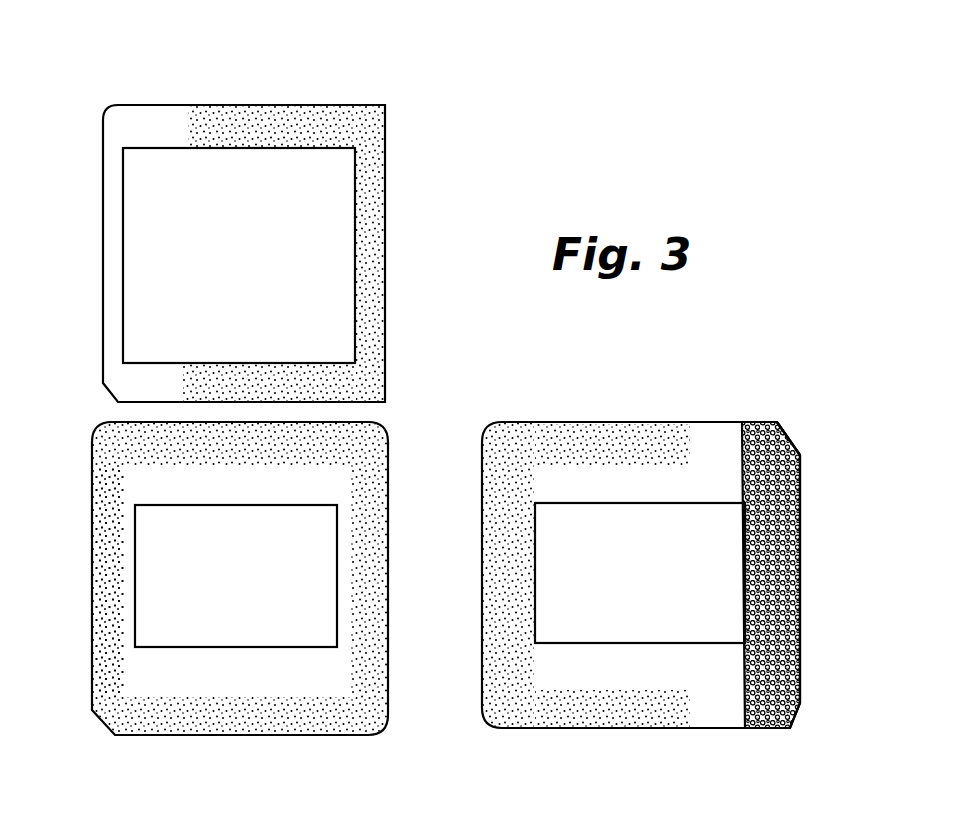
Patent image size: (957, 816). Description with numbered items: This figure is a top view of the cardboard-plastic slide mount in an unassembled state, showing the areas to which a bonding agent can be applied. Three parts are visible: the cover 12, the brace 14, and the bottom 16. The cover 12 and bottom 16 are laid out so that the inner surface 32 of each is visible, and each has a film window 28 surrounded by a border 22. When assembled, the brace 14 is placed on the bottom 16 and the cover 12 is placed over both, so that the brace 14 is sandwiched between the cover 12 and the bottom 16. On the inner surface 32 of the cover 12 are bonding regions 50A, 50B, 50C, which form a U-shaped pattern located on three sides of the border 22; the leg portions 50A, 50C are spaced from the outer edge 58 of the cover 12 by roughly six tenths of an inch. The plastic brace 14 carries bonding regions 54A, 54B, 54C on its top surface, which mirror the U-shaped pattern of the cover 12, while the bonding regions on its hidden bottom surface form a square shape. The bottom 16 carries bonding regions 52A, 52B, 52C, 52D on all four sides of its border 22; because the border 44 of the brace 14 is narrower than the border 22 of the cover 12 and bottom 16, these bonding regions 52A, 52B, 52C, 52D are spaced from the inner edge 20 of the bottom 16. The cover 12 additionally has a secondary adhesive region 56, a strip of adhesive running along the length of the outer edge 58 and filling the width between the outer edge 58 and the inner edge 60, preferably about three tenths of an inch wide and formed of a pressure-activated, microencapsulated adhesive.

The cover 12 is at (731, 420).
The brace 14 is at (296, 104).
The bottom 16 is at (392, 470).
The inner edge 20 is at (248, 646).
The border 22 is at (280, 485).
The film window 28 is at (214, 609).
The inner surface 32 is at (228, 675).
The border 44 is at (108, 228).
The bonding region 50A is at (596, 432).
The bonding region 50B is at (508, 497).
The bonding region 50C is at (620, 706).
The bonding region 52A is at (308, 438).
The bonding region 52B is at (105, 540).
The bonding region 52C is at (332, 716).
The bonding region 52D is at (372, 629).
The bonding region 54A is at (248, 125).
The bonding region 54B is at (375, 192).
The bonding region 54C is at (280, 376).
The secondary adhesive region 56 is at (803, 474).
The outer edge 58 is at (802, 556).
The inner edge 60 is at (744, 547).